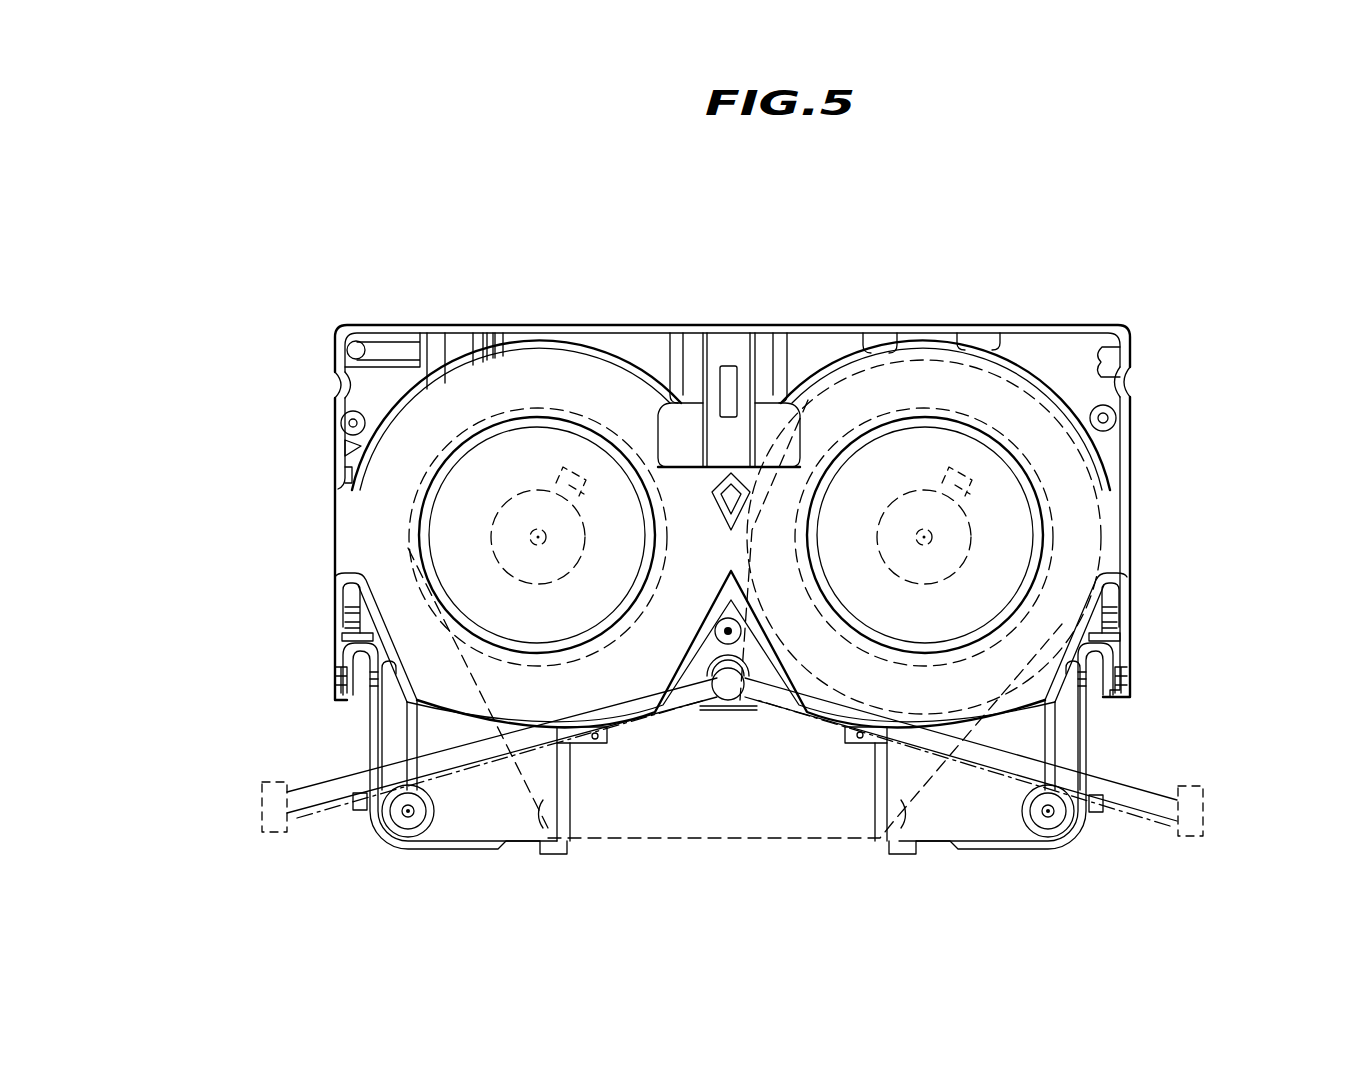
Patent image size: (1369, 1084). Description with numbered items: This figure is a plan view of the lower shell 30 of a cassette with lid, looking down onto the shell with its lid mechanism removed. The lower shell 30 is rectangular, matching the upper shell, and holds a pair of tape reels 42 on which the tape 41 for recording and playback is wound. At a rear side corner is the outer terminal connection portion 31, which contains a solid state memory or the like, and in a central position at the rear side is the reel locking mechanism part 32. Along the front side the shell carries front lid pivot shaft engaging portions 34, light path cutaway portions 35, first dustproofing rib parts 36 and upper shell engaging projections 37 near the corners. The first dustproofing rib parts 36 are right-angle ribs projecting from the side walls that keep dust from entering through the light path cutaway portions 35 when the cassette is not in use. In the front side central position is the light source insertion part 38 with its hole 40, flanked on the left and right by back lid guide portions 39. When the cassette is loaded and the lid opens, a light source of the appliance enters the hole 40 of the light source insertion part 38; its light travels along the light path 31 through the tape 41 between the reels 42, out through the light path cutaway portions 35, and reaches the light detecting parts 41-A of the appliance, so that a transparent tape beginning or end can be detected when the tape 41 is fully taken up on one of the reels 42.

The lower shell 30 is at (759, 545).
The outer terminal connection portion 31 is at (389, 310).
The reel locking mechanism part 32 is at (728, 300).
The front lid pivot shaft engaging portions 34 is at (372, 745).
The light path cutaway portions 35 is at (380, 793).
The first dustproofing rib parts 36 is at (355, 815).
The upper shell engaging projections 37 is at (410, 812).
The light source insertion part 38 is at (727, 785).
The back lid guide portions 39 is at (577, 787).
The hole 40 is at (725, 685).
The tape 41 is at (1000, 400).
The light detecting parts 41-A is at (262, 826).
The tape reels 42 is at (577, 370).